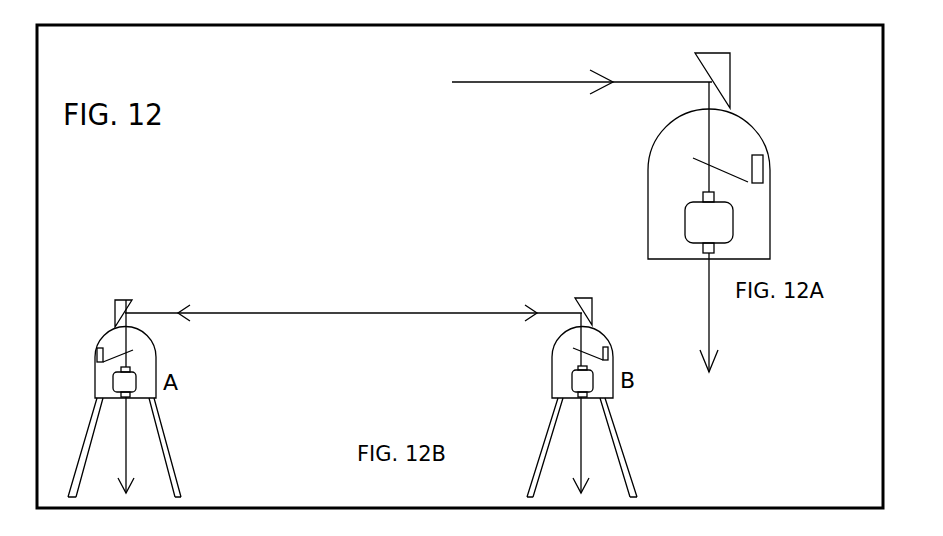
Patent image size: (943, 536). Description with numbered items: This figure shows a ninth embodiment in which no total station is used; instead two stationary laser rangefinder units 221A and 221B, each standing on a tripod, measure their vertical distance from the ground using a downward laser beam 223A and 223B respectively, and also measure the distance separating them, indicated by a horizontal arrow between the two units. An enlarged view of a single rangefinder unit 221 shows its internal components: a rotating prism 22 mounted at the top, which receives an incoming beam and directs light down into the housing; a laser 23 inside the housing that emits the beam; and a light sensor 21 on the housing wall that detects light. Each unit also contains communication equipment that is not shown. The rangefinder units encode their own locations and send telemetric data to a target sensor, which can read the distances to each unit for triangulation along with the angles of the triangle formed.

In FIG. 12A, the light sensor 21 is at (763, 166).
In FIG. 12A, the rotating prism 22 is at (735, 72).
In FIG. 12A, the laser 23 is at (680, 222).
In FIG. 12A, the rangefinder unit 221 is at (770, 222).
In FIG. 12B, the stationary laser rangefinder unit 221A is at (156, 348).
In FIG. 12B, the stationary laser rangefinder unit 221B is at (603, 337).
In FIG. 12B, the laser beam 223A is at (127, 470).
In FIG. 12B, the laser beam 223B is at (582, 448).